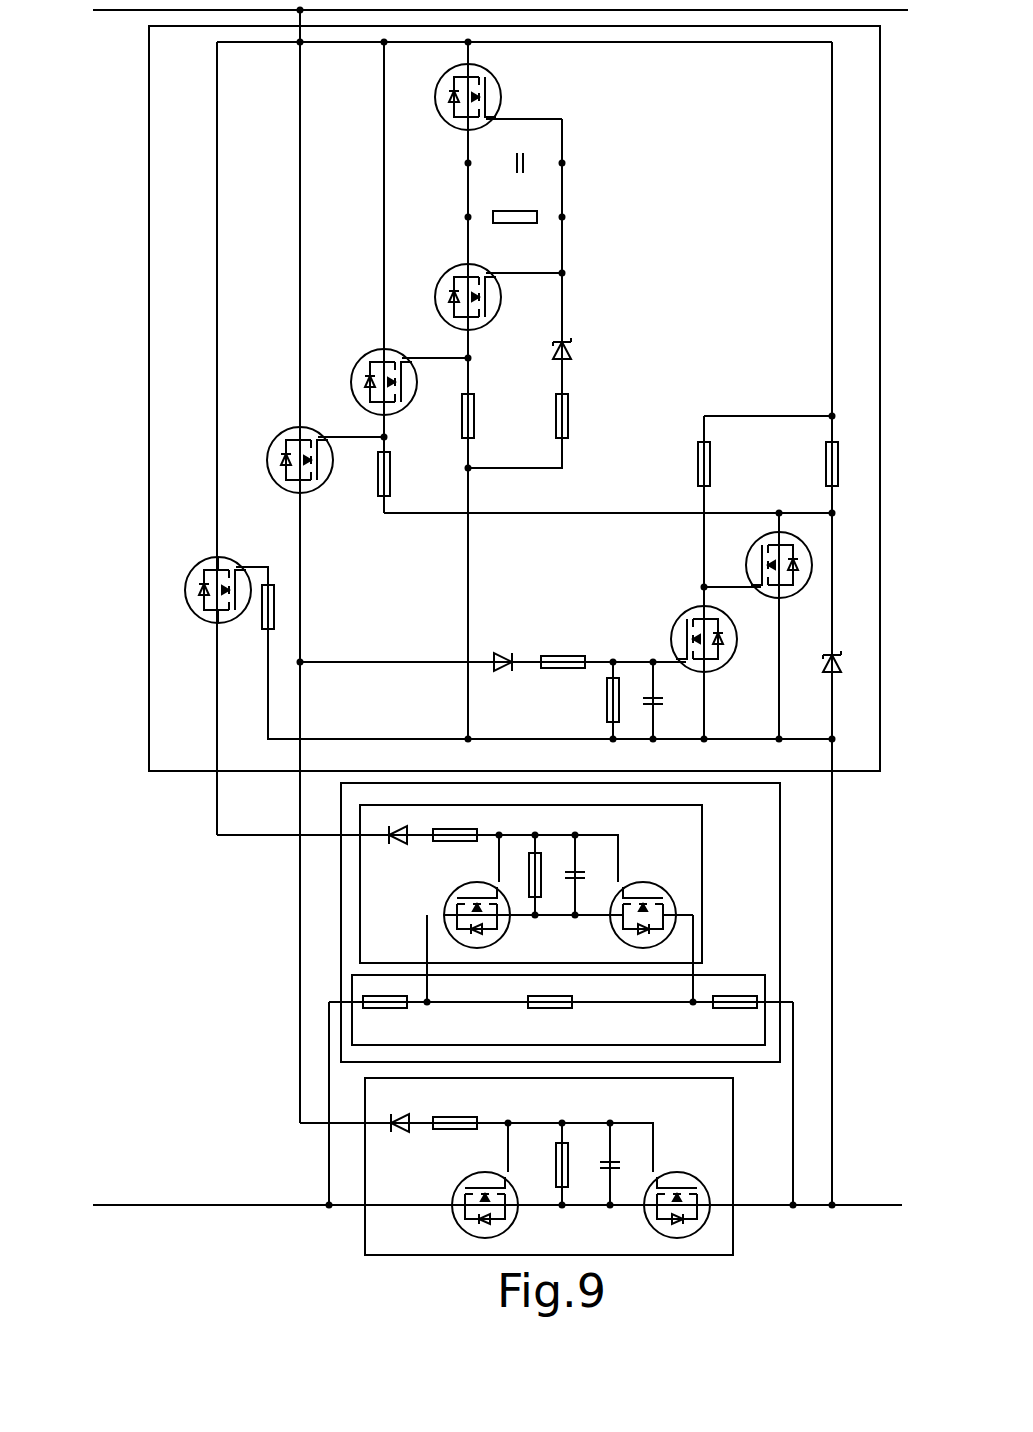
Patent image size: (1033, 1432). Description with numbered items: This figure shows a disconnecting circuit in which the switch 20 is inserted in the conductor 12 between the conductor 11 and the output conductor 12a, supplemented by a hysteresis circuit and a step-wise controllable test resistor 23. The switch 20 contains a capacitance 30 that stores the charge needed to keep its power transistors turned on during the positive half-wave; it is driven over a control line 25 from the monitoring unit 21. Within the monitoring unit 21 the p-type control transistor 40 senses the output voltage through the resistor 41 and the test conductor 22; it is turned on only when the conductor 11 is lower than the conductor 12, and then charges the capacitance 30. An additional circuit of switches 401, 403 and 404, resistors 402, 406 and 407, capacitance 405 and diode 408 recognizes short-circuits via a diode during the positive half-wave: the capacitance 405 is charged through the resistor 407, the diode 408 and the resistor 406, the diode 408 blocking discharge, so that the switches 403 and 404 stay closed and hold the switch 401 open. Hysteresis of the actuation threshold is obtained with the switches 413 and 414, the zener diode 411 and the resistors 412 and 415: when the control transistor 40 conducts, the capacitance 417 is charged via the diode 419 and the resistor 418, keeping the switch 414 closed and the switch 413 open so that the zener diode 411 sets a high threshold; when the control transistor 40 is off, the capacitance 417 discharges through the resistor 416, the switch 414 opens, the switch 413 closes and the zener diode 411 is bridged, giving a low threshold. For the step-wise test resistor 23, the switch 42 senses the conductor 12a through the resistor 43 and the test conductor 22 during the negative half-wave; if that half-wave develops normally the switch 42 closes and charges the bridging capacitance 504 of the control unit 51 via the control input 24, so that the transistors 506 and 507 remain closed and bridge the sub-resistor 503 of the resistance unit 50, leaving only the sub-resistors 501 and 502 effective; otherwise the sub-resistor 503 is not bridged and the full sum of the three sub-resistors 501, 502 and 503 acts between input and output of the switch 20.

The conductor 11 is at (130, 10).
The conductor 12 is at (183, 1200).
The conductor 12a is at (868, 1205).
The switch 20 is at (365, 1227).
The monitoring unit 21 is at (195, 772).
The test conductor 22 is at (834, 1040).
The test resistor 23 is at (780, 947).
The control input 24 is at (341, 835).
The control line 25 is at (365, 1124).
The capacitance 30 is at (620, 1165).
The control transistor 40 is at (272, 445).
The resistor 41 is at (378, 478).
The switch 42 is at (190, 612).
The resistor 43 is at (262, 627).
The resistance unit 50 is at (730, 975).
The control unit 51 is at (705, 900).
The switch 401 is at (358, 362).
The resistor 402 is at (477, 410).
The switch 403 is at (440, 272).
The switch 404 is at (436, 97).
The capacitance 405 is at (522, 158).
The resistor 406 is at (518, 212).
The resistor 407 is at (570, 413).
The diode 408 is at (572, 356).
The zener diode 411 is at (828, 678).
The resistor 412 is at (827, 470).
The switch 413 is at (745, 560).
The switch 414 is at (678, 618).
The resistor 415 is at (697, 458).
The resistor 416 is at (612, 702).
The capacitance 417 is at (650, 695).
The resistor 418 is at (563, 650).
The diode 419 is at (500, 650).
The sub-resistor 501 is at (374, 1009).
The sub-resistor 502 is at (745, 1009).
The sub-resistor 503 is at (556, 1009).
The bridging capacitance 504 is at (585, 872).
The transistor 506 is at (497, 940).
The transistor 507 is at (627, 939).